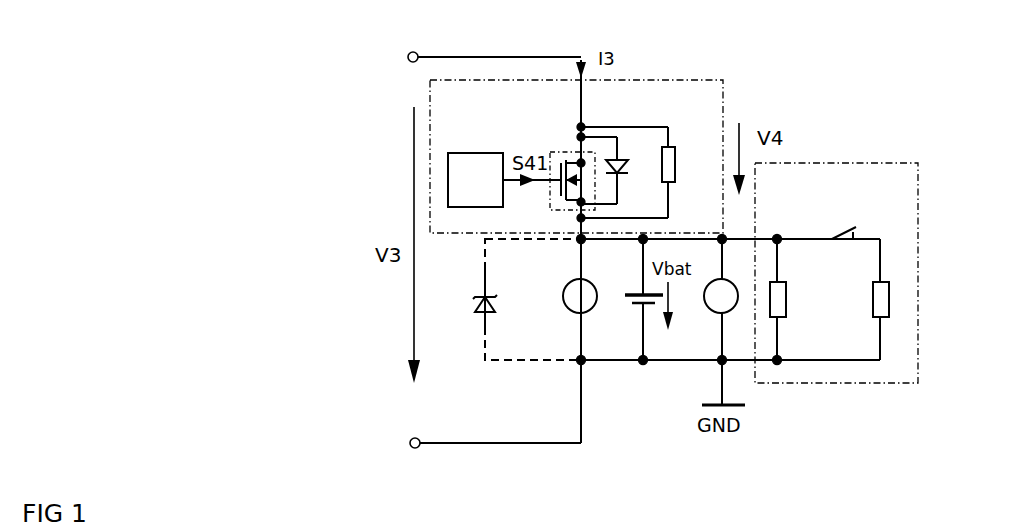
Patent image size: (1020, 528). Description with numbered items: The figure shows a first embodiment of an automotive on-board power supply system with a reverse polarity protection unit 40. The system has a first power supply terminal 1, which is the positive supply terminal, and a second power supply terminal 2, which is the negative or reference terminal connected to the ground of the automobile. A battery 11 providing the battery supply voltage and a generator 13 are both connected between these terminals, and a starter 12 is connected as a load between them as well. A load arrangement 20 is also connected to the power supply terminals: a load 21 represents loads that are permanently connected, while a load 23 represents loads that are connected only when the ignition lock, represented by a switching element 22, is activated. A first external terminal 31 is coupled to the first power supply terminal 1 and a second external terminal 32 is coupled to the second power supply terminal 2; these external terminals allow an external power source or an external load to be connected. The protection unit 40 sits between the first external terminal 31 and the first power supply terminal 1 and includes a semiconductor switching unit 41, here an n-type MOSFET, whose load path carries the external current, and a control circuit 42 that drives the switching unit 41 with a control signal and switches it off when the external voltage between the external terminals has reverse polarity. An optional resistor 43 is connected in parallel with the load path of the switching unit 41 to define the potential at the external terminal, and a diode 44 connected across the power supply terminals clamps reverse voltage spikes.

The first power supply terminal 1 is at (574, 242).
The second power supply terminal 2 is at (574, 358).
The battery 11 is at (632, 290).
The starter 12 is at (562, 296).
The generator 13 is at (712, 285).
The load arrangement 20 is at (835, 162).
The load 21 is at (789, 292).
The switching element 22 is at (840, 226).
The load 23 is at (870, 290).
The first external terminal 31 is at (411, 52).
The second external terminal 32 is at (419, 449).
The reverse polarity protection unit 40 is at (725, 122).
The semiconductor switching unit 41 is at (560, 150).
The control circuit 42 is at (485, 152).
The resistor 43 is at (677, 167).
The diode 44 is at (473, 304).